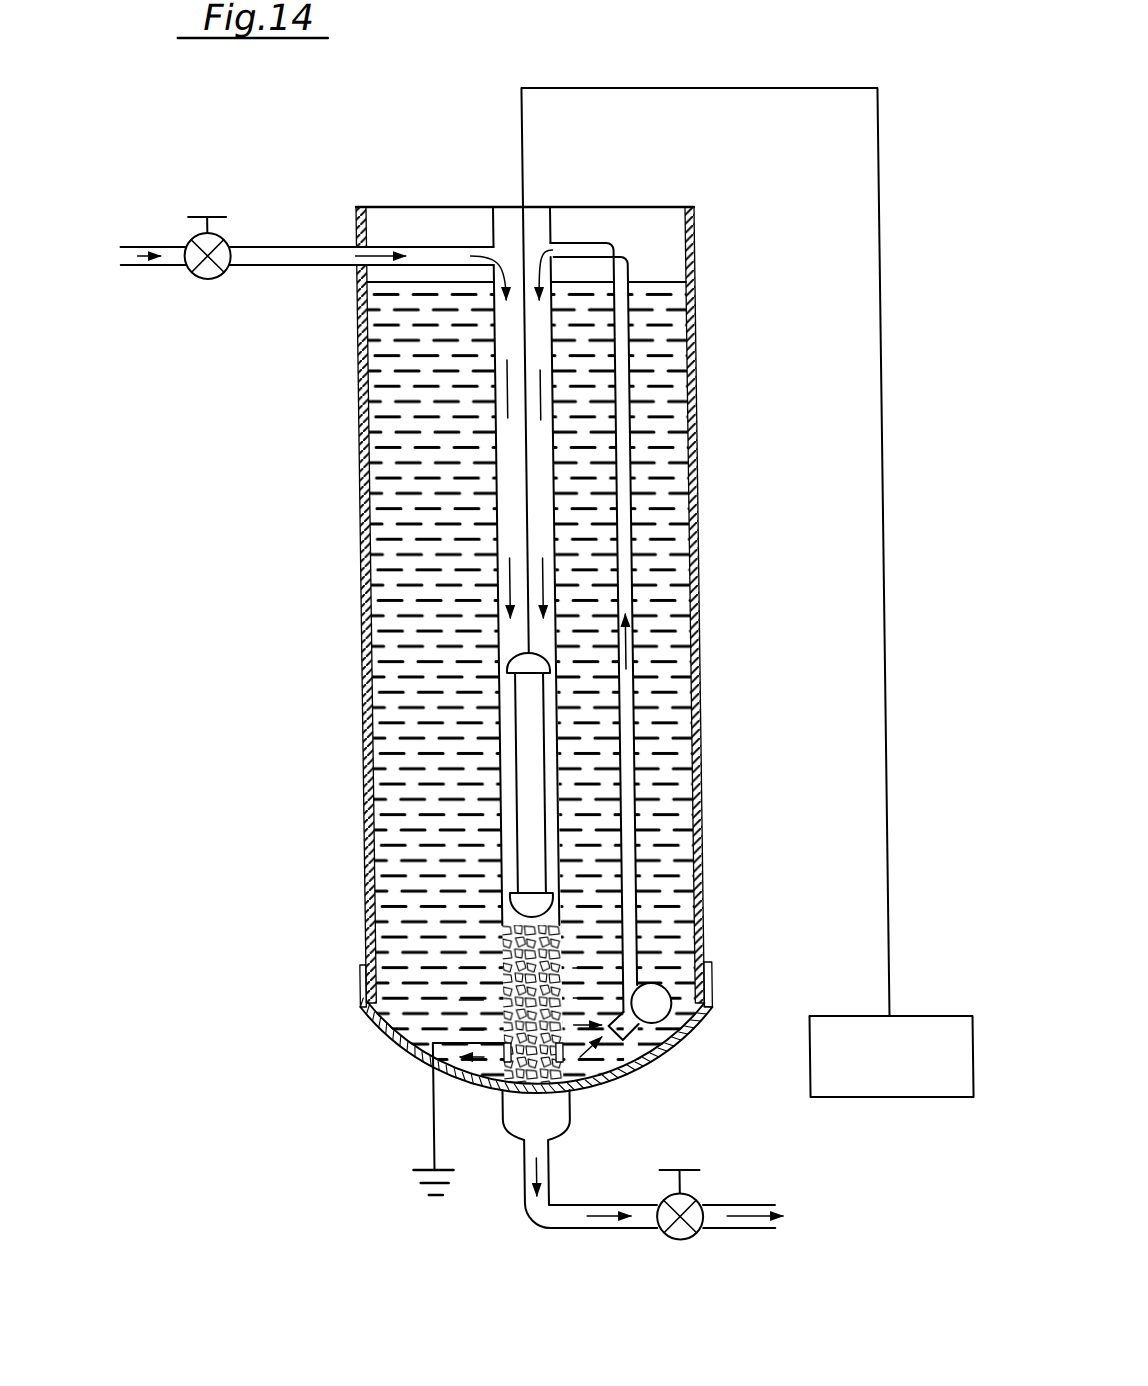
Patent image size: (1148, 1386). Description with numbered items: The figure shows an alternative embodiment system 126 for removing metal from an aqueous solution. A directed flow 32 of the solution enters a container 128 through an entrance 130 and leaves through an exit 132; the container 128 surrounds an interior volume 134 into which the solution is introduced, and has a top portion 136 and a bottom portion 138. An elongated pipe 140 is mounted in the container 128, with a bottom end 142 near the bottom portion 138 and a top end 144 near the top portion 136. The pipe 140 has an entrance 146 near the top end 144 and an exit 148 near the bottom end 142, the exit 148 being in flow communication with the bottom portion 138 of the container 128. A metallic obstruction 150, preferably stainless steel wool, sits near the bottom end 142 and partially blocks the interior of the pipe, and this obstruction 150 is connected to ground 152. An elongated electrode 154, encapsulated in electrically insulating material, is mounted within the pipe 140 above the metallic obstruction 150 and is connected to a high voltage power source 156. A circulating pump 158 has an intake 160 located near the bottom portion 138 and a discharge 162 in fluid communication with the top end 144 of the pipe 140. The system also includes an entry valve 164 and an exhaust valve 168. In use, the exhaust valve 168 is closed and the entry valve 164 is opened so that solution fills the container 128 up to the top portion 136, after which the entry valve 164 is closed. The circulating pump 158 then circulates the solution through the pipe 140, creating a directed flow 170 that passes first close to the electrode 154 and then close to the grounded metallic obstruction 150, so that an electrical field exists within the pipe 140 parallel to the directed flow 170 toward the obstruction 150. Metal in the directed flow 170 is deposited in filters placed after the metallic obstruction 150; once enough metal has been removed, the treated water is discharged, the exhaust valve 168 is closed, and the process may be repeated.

The directed flow 32 is at (108, 256).
The alternative embodiment system 126 is at (487, 136).
The container 128 is at (356, 520).
The entrance 130 is at (288, 247).
The exit 132 is at (506, 1112).
The interior volume 134 is at (663, 358).
The top portion 136 is at (658, 239).
The bottom portion 138 is at (422, 1010).
The elongated pipe 140 is at (491, 330).
The bottom end 142 is at (493, 1027).
The top end 144 is at (552, 227).
The entrance 146 is at (543, 241).
The exit 148 is at (493, 936).
The metallic obstruction 150 is at (552, 935).
The ground 152 is at (421, 1128).
The elongated electrode 154 is at (530, 784).
The high voltage power source 156 is at (851, 1074).
The circulating pump 158 is at (641, 1003).
The intake 160 is at (594, 1057).
The discharge 162 is at (627, 260).
The entry valve 164 is at (233, 233).
The exhaust valve 168 is at (667, 1240).
The directed flow 170 is at (538, 393).